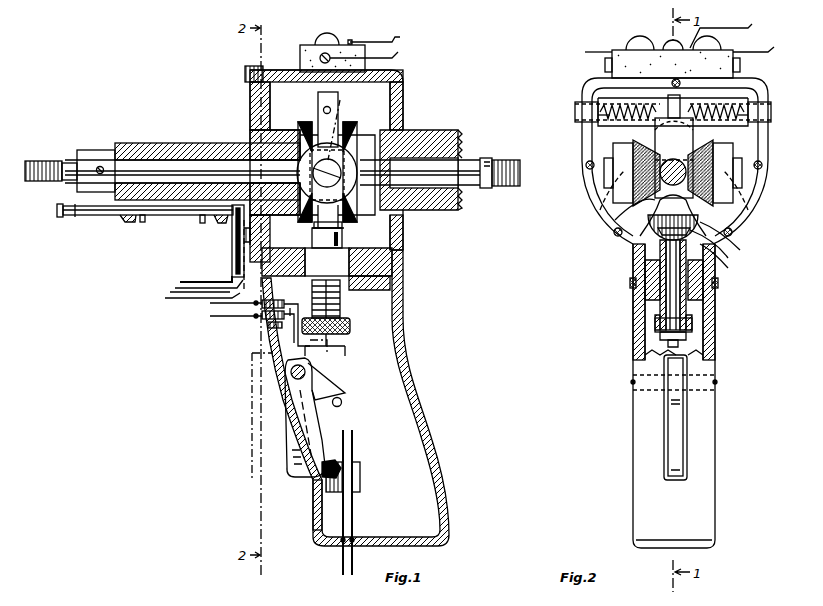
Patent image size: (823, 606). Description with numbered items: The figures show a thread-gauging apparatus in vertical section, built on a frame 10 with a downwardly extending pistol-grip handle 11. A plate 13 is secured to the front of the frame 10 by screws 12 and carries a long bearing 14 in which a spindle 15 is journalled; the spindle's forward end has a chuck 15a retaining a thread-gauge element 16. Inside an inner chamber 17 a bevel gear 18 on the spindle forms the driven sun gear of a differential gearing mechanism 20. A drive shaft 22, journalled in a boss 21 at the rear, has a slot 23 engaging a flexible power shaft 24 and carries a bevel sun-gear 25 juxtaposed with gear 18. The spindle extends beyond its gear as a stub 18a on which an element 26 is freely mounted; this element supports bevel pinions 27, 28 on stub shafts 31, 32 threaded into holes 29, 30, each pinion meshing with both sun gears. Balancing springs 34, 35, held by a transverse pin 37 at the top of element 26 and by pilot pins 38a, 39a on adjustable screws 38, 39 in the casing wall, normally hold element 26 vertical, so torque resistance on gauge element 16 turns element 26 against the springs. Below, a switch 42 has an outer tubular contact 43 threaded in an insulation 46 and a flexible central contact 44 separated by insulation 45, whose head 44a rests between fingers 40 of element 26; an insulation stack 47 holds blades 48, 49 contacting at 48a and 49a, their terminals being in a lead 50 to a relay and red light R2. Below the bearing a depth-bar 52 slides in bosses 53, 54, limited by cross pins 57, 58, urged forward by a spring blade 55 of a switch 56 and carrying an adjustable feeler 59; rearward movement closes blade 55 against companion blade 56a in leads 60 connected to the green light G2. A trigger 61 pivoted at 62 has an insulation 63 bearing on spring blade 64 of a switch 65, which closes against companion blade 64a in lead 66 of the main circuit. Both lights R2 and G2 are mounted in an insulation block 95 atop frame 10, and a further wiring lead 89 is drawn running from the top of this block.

In FIG. 1, the frame 10 is at (403, 84).
In FIG. 2, the frame 10 is at (762, 90).
In FIG. 1, the handle 11 is at (435, 383).
In FIG. 2, the handle 11 is at (718, 500).
In FIG. 1, the screws 12 is at (246, 74).
In FIG. 2, the screws 12 is at (681, 84).
In FIG. 1, the plate 13 is at (250, 108).
In FIG. 1, the bearing 14 is at (165, 143).
In FIG. 1, the spindle 15 is at (140, 165).
In FIG. 2, the spindle 15 is at (673, 165).
In FIG. 1, the chuck 15a is at (97, 152).
In FIG. 1, the thread-gauge element 16 is at (42, 160).
In FIG. 1, the inner chamber 17 is at (380, 80).
In FIG. 2, the inner chamber 17 is at (728, 268).
In FIG. 1, the bevel gear 18 is at (299, 140).
In FIG. 1, the stub 18a is at (349, 125).
In FIG. 1, the differential gearing mechanism 20 is at (350, 125).
In FIG. 2, the differential gearing mechanism 20 is at (622, 220).
In FIG. 1, the boss 21 is at (418, 132).
In FIG. 1, the drive shaft 22 is at (420, 172).
In FIG. 1, the slot 23 is at (486, 188).
In FIG. 1, the flexible power shaft 24 is at (510, 186).
In FIG. 1, the bevel sun-gear 25 is at (345, 225).
In FIG. 1, the element 26 is at (319, 133).
In FIG. 2, the element 26 is at (696, 126).
In FIG. 1, the bevel pinion 27 is at (318, 140).
In FIG. 2, the bevel pinion 27 is at (716, 169).
In FIG. 2, the bevel pinion 28 is at (632, 167).
In FIG. 2, the threaded hole 29 is at (645, 228).
In FIG. 2, the threaded hole 30 is at (705, 225).
In FIG. 2, the stub shaft 31 is at (608, 190).
In FIG. 2, the stub shaft 32 is at (740, 190).
In FIG. 2, the balancing spring 34 is at (625, 105).
In FIG. 2, the balancing spring 35 is at (718, 108).
In FIG. 2, the transverse pin 37 is at (662, 96).
In FIG. 2, the adjustable screw 38 is at (576, 112).
In FIG. 2, the pilot pin 38a is at (600, 118).
In FIG. 2, the adjustable screw 39 is at (770, 112).
In FIG. 2, the pilot pin 39a is at (745, 118).
In FIG. 2, the fingers 40 is at (650, 262).
In FIG. 2, the switch 42 is at (722, 272).
In FIG. 1, the outer tubular contact element 43 is at (342, 308).
In FIG. 2, the outer tubular contact element 43 is at (656, 308).
In FIG. 1, the flexible central contact element 44 is at (398, 264).
In FIG. 2, the flexible central contact element 44 is at (700, 342).
In FIG. 1, the head 44a is at (352, 262).
In FIG. 2, the head 44a is at (740, 250).
In FIG. 2, the insulation 45 is at (690, 300).
In FIG. 1, the insulation 46 is at (350, 250).
In FIG. 2, the insulation 46 is at (728, 258).
In FIG. 1, the stack 47 is at (345, 238).
In FIG. 1, the blade 48 is at (296, 330).
In FIG. 1, the contact 48a is at (350, 328).
In FIG. 1, the blade 49 is at (330, 352).
In FIG. 1, the contact 49a is at (340, 348).
In FIG. 2, the contact 49a is at (660, 337).
In FIG. 1, the lead 50 is at (240, 308).
In FIG. 2, the lead 50 is at (590, 52).
In FIG. 1, the depth-bar 52 is at (100, 215).
In FIG. 1, the boss 53 is at (128, 222).
In FIG. 1, the boss 54 is at (222, 224).
In FIG. 1, the spring blade 55 is at (236, 264).
In FIG. 1, the switch 56 is at (218, 250).
In FIG. 1, the companion blade 56a is at (270, 255).
In FIG. 1, the cross pin 57 is at (143, 222).
In FIG. 1, the cross pin 58 is at (203, 223).
In FIG. 1, the adjustable feeler element 59 is at (60, 218).
In FIG. 1, the leads 60 is at (185, 300).
In FIG. 2, the leads 60 is at (763, 45).
In FIG. 1, the trigger member 61 is at (290, 425).
In FIG. 2, the trigger member 61 is at (680, 438).
In FIG. 1, the pivot 62 is at (306, 372).
In FIG. 2, the pivot 62 is at (718, 380).
In FIG. 1, the insulation 63 is at (338, 460).
In FIG. 1, the spring blade 64 is at (313, 490).
In FIG. 1, the companion blade 64a is at (355, 483).
In FIG. 1, the switch 65 is at (370, 468).
In FIG. 1, the lead 66 is at (340, 567).
In FIG. 1, the conductor 89 is at (383, 33).
In FIG. 2, the conductor 89 is at (731, 32).
In FIG. 1, the insulation block 95 is at (321, 57).
In FIG. 2, the insulation block 95 is at (672, 64).
In FIG. 1, the red signal light R2 is at (318, 35).
In FIG. 2, the red signal light R2 is at (718, 42).
In FIG. 2, the green signal light G2 is at (630, 38).